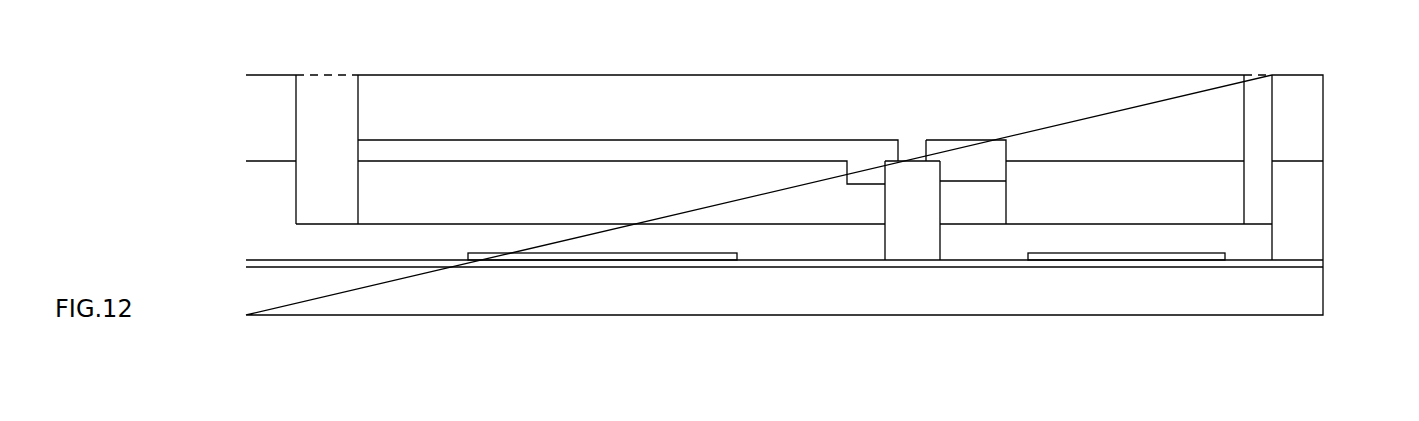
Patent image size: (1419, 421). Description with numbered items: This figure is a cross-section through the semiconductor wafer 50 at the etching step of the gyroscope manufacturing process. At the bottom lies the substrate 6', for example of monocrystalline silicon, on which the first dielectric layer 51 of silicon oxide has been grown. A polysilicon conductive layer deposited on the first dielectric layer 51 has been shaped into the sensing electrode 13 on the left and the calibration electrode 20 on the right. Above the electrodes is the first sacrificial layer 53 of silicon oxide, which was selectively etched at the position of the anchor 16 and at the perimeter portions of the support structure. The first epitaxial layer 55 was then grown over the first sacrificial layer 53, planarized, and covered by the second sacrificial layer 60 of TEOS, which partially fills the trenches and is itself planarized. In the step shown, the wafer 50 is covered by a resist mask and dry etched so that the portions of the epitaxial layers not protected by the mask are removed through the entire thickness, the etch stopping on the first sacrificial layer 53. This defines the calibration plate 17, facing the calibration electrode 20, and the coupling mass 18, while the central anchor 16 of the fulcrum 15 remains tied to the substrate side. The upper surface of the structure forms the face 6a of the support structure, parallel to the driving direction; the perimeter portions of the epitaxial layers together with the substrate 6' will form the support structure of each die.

The wafer 50 is at (178, 133).
The first dielectric layer 51 is at (756, 263).
The first sacrificial layer 53 is at (348, 256).
The first epitaxial layer 55 is at (444, 207).
The calibration plate 17 is at (655, 107).
The second sacrificial layer 60 is at (478, 145).
The fulcrum 15 is at (908, 152).
The anchor 16 is at (909, 247).
The coupling mass 18 is at (1150, 173).
The sensing electrode 13 is at (678, 255).
The calibration electrode 20 is at (1185, 255).
The face 6a is at (979, 244).
The substrate 6' is at (814, 264).